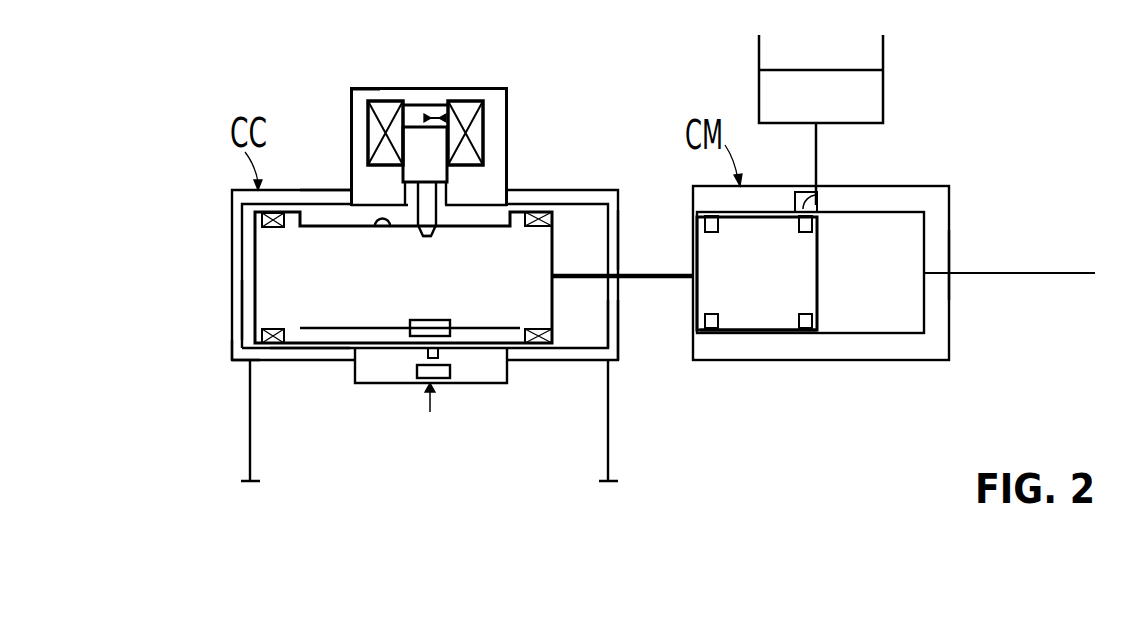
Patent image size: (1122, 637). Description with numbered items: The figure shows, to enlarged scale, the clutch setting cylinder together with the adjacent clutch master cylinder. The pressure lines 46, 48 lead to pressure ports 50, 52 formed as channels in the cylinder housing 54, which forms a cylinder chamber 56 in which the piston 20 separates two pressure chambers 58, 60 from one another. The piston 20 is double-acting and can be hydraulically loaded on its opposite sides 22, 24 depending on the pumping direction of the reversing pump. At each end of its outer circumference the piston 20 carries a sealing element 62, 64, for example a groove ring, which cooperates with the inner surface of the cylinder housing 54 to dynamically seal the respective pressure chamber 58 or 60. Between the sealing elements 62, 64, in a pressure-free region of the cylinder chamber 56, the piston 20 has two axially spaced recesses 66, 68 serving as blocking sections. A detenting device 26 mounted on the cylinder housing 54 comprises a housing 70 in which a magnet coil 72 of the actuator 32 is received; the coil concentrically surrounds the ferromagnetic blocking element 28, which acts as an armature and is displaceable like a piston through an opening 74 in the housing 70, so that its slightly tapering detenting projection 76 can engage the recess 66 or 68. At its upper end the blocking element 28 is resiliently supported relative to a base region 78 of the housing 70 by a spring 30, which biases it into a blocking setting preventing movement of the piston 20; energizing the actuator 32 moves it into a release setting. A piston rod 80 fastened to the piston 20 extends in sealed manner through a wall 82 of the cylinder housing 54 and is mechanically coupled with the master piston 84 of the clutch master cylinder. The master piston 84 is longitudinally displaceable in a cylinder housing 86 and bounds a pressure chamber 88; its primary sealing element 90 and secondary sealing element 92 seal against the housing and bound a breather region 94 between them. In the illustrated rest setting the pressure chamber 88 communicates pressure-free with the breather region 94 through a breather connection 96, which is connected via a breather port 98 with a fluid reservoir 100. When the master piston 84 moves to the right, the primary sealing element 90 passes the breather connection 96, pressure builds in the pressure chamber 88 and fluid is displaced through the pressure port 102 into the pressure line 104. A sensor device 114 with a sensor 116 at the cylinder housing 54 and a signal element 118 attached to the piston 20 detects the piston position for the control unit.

The piston 20 is at (354, 296).
The side of the piston 22 is at (253, 272).
The side of the piston 24 is at (553, 247).
The detenting device 26 is at (405, 149).
The blocking element 28 is at (443, 168).
The spring 30 is at (428, 114).
The actuator 32 is at (360, 99).
The pressure line 46 is at (608, 412).
The pressure line 48 is at (250, 415).
The pressure port 50 is at (608, 362).
The pressure port 52 is at (245, 365).
The cylinder housing 54 is at (325, 355).
The cylinder chamber 56 is at (328, 212).
The pressure chamber 58 is at (583, 317).
The pressure chamber 60 is at (253, 313).
The sealing element 62 is at (538, 350).
The sealing element 64 is at (252, 213).
The recess 66 is at (430, 238).
The recess 68 is at (381, 230).
The housing 70 is at (493, 202).
The magnet coil 72 is at (370, 135).
The opening 74 is at (412, 213).
The detenting projection 76 is at (440, 243).
The base region 78 is at (417, 103).
The piston rod 80 is at (583, 276).
The wall 82 is at (613, 250).
The master piston 84 is at (766, 304).
The cylinder housing 86 is at (805, 350).
The pressure chamber 88 is at (897, 273).
The primary sealing element 90 is at (794, 218).
The secondary sealing element 92 is at (700, 224).
The breather region 94 is at (758, 333).
The breather connection 96 is at (815, 206).
The breather port 98 is at (818, 185).
The fluid reservoir 100 is at (846, 108).
The pressure port 102 is at (950, 262).
The pressure line 104 is at (1090, 272).
The sensor device 114 is at (457, 418).
The sensor 116 is at (405, 370).
The signal element 118 is at (442, 335).